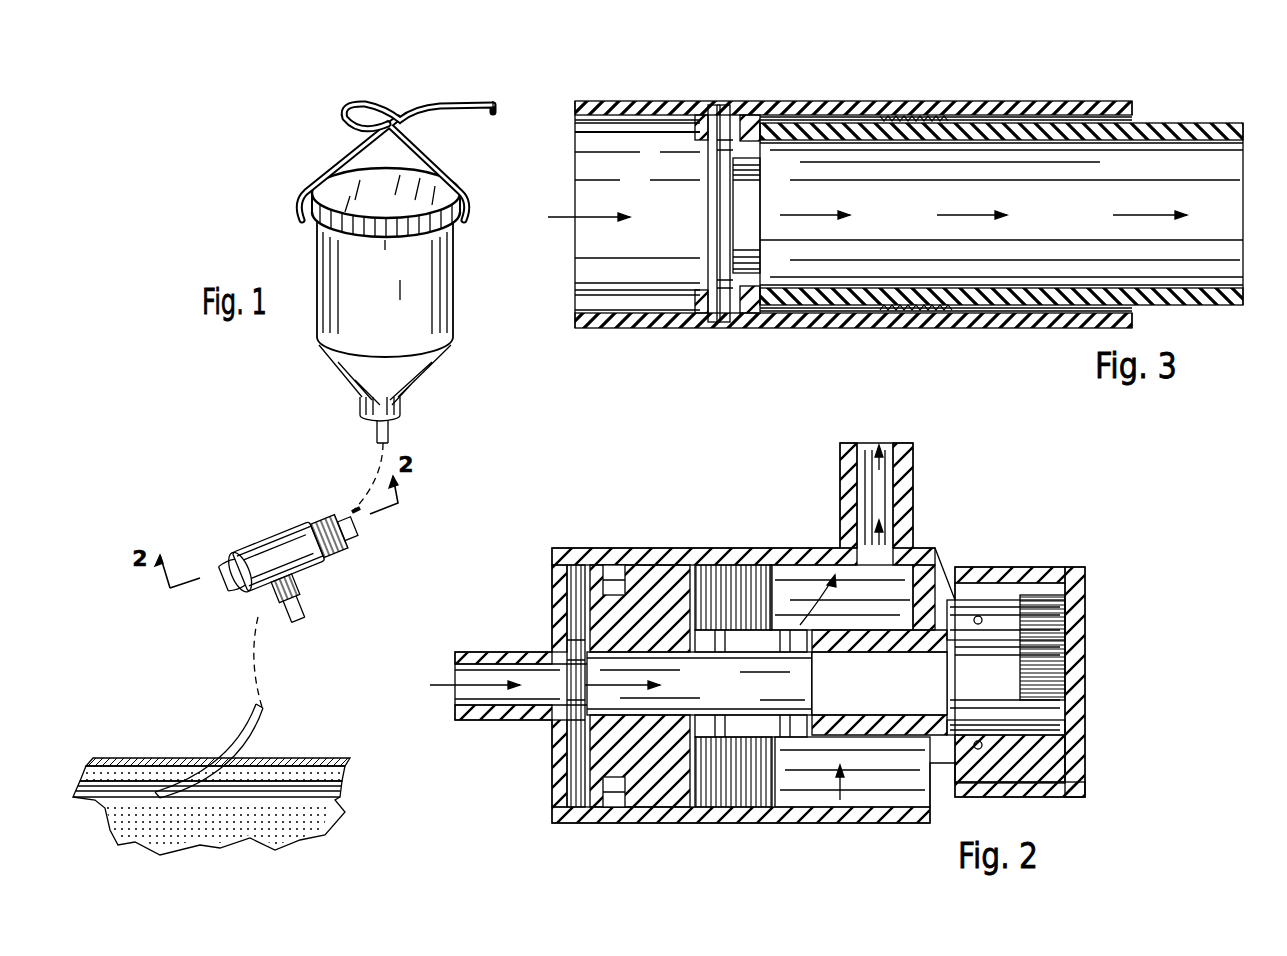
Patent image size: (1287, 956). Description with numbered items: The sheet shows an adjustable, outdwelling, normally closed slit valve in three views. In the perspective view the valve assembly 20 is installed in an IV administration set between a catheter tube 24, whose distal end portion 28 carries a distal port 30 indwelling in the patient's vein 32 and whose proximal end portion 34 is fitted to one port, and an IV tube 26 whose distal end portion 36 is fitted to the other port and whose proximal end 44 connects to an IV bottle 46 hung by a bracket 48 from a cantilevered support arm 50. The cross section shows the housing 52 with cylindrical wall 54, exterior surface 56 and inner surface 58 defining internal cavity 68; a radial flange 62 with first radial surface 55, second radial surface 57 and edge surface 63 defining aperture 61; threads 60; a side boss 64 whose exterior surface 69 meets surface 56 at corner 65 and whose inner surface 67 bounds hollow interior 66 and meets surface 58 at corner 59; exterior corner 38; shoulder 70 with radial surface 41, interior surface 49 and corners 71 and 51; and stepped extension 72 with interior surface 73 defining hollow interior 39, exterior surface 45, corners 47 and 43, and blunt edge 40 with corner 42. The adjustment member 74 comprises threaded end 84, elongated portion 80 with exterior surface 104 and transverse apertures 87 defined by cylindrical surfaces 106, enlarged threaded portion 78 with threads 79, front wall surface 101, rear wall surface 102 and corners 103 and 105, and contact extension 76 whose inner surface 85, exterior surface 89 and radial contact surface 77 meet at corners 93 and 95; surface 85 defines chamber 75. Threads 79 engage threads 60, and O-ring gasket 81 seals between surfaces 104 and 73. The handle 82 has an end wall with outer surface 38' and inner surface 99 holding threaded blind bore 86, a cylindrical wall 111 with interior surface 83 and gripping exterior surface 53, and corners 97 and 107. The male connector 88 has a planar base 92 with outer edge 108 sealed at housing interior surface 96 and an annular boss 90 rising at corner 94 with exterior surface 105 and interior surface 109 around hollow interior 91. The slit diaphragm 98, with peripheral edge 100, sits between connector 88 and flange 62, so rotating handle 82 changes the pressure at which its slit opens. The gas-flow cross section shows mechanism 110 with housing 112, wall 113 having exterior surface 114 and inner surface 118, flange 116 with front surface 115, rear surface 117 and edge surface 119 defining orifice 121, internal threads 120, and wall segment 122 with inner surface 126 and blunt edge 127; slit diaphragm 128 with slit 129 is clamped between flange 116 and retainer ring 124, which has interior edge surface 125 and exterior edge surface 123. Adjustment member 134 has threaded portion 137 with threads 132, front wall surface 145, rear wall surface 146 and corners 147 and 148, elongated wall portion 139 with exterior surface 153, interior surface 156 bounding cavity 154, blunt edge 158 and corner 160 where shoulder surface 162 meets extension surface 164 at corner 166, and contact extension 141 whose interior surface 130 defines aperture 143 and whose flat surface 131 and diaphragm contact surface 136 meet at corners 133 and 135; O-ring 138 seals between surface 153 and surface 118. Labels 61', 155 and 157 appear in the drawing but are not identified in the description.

In FIG. 1, the valve assembly 20 is at (318, 596).
In FIG. 2, the valve assembly 20 is at (1010, 505).
In FIG. 1, the catheter tube 24 is at (262, 732).
In FIG. 1, the IV tube 26 is at (345, 500).
In FIG. 1, the distal end portion 28 is at (190, 785).
In FIG. 1, the distal port 30 is at (155, 775).
In FIG. 1, the vein 32 is at (115, 765).
In FIG. 1, the proximal end portion 34 is at (282, 610).
In FIG. 1, the distal end portion 36 is at (330, 510).
In FIG. 2, the exterior annular corner 38 is at (839, 585).
In FIG. 2, the outer surface 38' is at (1129, 662).
In FIG. 2, the hollow cylindrical interior 39 is at (1022, 605).
In FIG. 2, the blunt edge 40 is at (1085, 780).
In FIG. 2, the radial surface 41 is at (948, 590).
In FIG. 2, the annular exterior corner 42 is at (1070, 797).
In FIG. 2, the annular exterior corner 43 is at (995, 580).
In FIG. 1, the proximal end 44 is at (375, 430).
In FIG. 2, the proximal end 44 is at (595, 580).
In FIG. 2, the exterior surface 45 is at (960, 720).
In FIG. 1, the IV bottle 46 is at (386, 305).
In FIG. 2, the annular corner 47 is at (925, 720).
In FIG. 1, the bracket 48 is at (340, 162).
In FIG. 2, the shoulder interior surface 49 is at (925, 760).
In FIG. 1, the cantilevered support arm 50 is at (452, 100).
In FIG. 2, the annular interior corner 51 is at (940, 790).
In FIG. 2, the housing 52 is at (745, 548).
In FIG. 2, the cylindrical exterior surface 53 is at (1060, 600).
In FIG. 2, the cylindrical wall 54 is at (650, 565).
In FIG. 2, the first radial surface 55 is at (575, 823).
In FIG. 2, the cylindrical exterior surface 56 is at (710, 565).
In FIG. 2, the second radial surface 57 is at (668, 823).
In FIG. 2, the inner surface 58 is at (770, 565).
In FIG. 2, the interior annular corner 59 is at (860, 478).
In FIG. 2, the threads 60 is at (722, 823).
In FIG. 2, the aperture 61 is at (786, 707).
In FIG. 2, the passage 61' is at (856, 623).
In FIG. 2, the annular retention wall 62 is at (672, 823).
In FIG. 2, the orifice-defining edge surface 63 is at (760, 630).
In FIG. 2, the boss 64 is at (925, 462).
In FIG. 2, the exterior annular corner 65 is at (842, 548).
In FIG. 2, the hollow interior 66 is at (913, 445).
In FIG. 2, the boss inner surface 67 is at (872, 448).
In FIG. 2, the internal cavity 68 is at (841, 597).
In FIG. 2, the boss exterior surface 69 is at (845, 470).
In FIG. 2, the annular shoulder 70 is at (950, 600).
In FIG. 2, the exterior annular corner 71 is at (940, 575).
In FIG. 2, the stepped cylindrical extension 72 is at (955, 615).
In FIG. 2, the interior surface 73 is at (1020, 782).
In FIG. 2, the adjustment member 74 is at (835, 807).
In FIG. 2, the hollow portion 75 is at (699, 683).
In FIG. 2, the contact extension 76 is at (612, 565).
In FIG. 2, the radial contact surface 77 is at (548, 790).
In FIG. 2, the enlarged threaded portion 78 is at (725, 823).
In FIG. 2, the threads 79 is at (685, 823).
In FIG. 2, the elongated portion 80 is at (845, 823).
In FIG. 2, the gasket 81 is at (975, 797).
In FIG. 2, the handle 82 is at (1085, 795).
In FIG. 2, the cylindrical interior surface 83 is at (1050, 590).
In FIG. 2, the threaded end 84 is at (1065, 650).
In FIG. 2, the cylindrical inner surface 85 is at (550, 760).
In FIG. 2, the threaded blind bore 86 is at (1085, 760).
In FIG. 2, the transverse apertures 87 is at (795, 823).
In FIG. 2, the male connector 88 is at (550, 730).
In FIG. 2, the exterior surface 89 is at (575, 565).
In FIG. 2, the annular boss 90 is at (520, 652).
In FIG. 2, the hollow interior 91 is at (478, 688).
In FIG. 2, the planar base 92 is at (570, 600).
In FIG. 2, the annular corner 93 is at (575, 590).
In FIG. 2, the annular corner 94 is at (560, 620).
In FIG. 2, the annular exterior corner 95 is at (590, 575).
In FIG. 2, the interior surface 96 is at (555, 807).
In FIG. 2, the annular corner 97 is at (1065, 610).
In FIG. 2, the slit diaphragm 98 is at (625, 823).
In FIG. 2, the inner surface 99 is at (1065, 625).
In FIG. 2, the peripheral edge 100 is at (640, 565).
In FIG. 2, the front wall surface 101 is at (655, 565).
In FIG. 2, the slit 102 is at (530, 720).
In FIG. 2, the annular exterior corner 103 is at (620, 565).
In FIG. 2, the exterior surface 104 is at (855, 823).
In FIG. 2, the exterior surface 105 is at (455, 655).
In FIG. 2, the cylindrical surface 106 is at (765, 565).
In FIG. 2, the annular corner 107 is at (945, 790).
In FIG. 2, the outer edge 108 is at (560, 823).
In FIG. 2, the interior flow path-defining surface 109 is at (458, 690).
In FIG. 3, the adjustable slit valve control mechanism 110 is at (1170, 92).
In FIG. 2, the cylindrical wall 111 is at (1030, 575).
In FIG. 3, the housing 112 is at (932, 101).
In FIG. 3, the cylindrical wall 113 is at (870, 101).
In FIG. 3, the exterior surface 114 is at (990, 328).
In FIG. 3, the front radial surface 115 is at (720, 115).
In FIG. 3, the annular retention wall 116 is at (725, 115).
In FIG. 3, the rear radial surface 117 is at (738, 118).
In FIG. 3, the inner surface 118 is at (958, 118).
In FIG. 3, the interior edge surface 119 is at (715, 110).
In FIG. 3, the internal threads 120 is at (810, 328).
In FIG. 3, the orifice 121 is at (700, 330).
In FIG. 3, the cylindrical wall segment 122 is at (628, 101).
In FIG. 3, the exterior edge surface 123 is at (640, 328).
In FIG. 3, the retainer ring 124 is at (705, 110).
In FIG. 3, the interior edge surface 125 is at (710, 290).
In FIG. 3, the inner surface 126 is at (580, 118).
In FIG. 3, the blunt edge 127 is at (570, 120).
In FIG. 3, the slit diaphragm 128 is at (745, 240).
In FIG. 3, the slit 129 is at (728, 218).
In FIG. 3, the interior surface 130 is at (712, 130).
In FIG. 3, the flat surface 131 is at (762, 118).
In FIG. 3, the threads 132 is at (752, 328).
In FIG. 3, the annular corner 133 is at (750, 255).
In FIG. 3, the adjustment member 134 is at (1140, 123).
In FIG. 3, the annular corner 135 is at (700, 280).
In FIG. 3, the diaphragm contact surface 136 is at (742, 120).
In FIG. 3, the enlarged threaded portion 137 is at (735, 328).
In FIG. 3, the O-ring seal 138 is at (1010, 117).
In FIG. 3, the elongated cylindrical wall portion 139 is at (895, 328).
In FIG. 3, the contact extension 141 is at (700, 140).
In FIG. 3, the aperture 143 is at (712, 200).
In FIG. 3, the front wall surface 145 is at (720, 325).
In FIG. 3, the rear wall surface 146 is at (760, 330).
In FIG. 3, the annular corner 147 is at (712, 325).
In FIG. 3, the annular corner 148 is at (795, 328).
In FIG. 3, the exterior surface 153 is at (1200, 123).
In FIG. 3, the interior cavity 154 is at (886, 216).
In FIG. 2, the passage 155 is at (938, 800).
In FIG. 3, the interior surface 156 is at (1062, 300).
In FIG. 2, the passage 157 is at (930, 742).
In FIG. 3, the annular blunt edge 158 is at (1240, 300).
In FIG. 3, the annular corner 160 is at (748, 128).
In FIG. 3, the interior annular shoulder surface 162 is at (768, 130).
In FIG. 3, the cylindrical interior extension surface 164 is at (780, 248).
In FIG. 3, the corner 166 is at (722, 330).